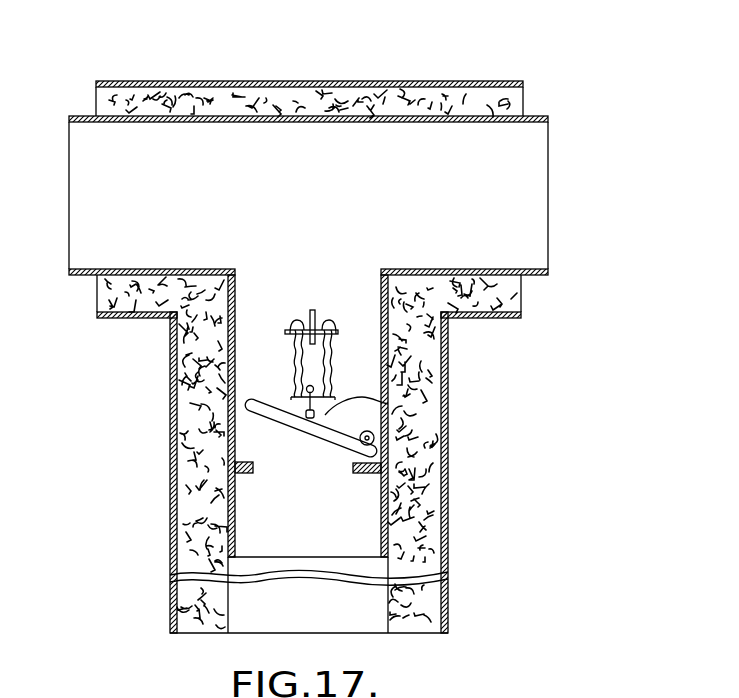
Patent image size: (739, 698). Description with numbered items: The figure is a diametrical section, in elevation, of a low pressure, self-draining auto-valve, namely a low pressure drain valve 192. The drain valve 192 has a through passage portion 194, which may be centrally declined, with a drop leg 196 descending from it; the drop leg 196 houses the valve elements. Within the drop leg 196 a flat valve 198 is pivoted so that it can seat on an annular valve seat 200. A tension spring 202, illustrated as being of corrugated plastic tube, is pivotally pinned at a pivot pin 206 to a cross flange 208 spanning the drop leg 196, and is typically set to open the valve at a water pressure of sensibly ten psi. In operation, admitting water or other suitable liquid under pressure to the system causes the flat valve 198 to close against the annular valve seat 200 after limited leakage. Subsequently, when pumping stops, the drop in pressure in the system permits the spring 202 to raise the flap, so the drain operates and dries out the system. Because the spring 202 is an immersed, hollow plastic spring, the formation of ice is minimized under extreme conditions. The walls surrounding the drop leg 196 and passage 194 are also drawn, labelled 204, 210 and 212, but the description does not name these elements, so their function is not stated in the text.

The low pressure drain valve 192 is at (452, 78).
The through passage portion 194 is at (517, 116).
The drop leg 196 is at (384, 371).
The flat valve 198 is at (302, 428).
The annular valve seat 200 is at (352, 467).
The tension spring 202 is at (290, 350).
The dome housing 204 is at (370, 403).
The pivot pin 206 is at (339, 331).
The cross flange 208 is at (315, 308).
The outer wall 210 is at (447, 440).
The insulation 212 is at (418, 530).